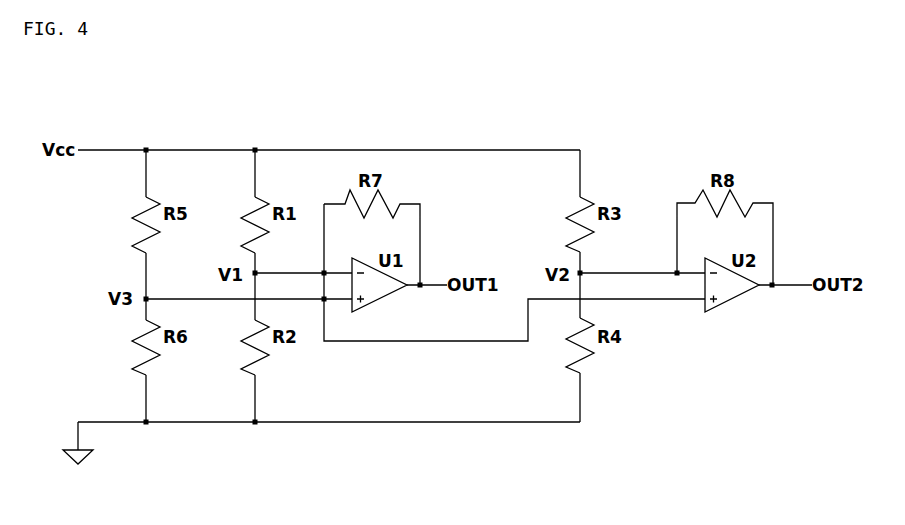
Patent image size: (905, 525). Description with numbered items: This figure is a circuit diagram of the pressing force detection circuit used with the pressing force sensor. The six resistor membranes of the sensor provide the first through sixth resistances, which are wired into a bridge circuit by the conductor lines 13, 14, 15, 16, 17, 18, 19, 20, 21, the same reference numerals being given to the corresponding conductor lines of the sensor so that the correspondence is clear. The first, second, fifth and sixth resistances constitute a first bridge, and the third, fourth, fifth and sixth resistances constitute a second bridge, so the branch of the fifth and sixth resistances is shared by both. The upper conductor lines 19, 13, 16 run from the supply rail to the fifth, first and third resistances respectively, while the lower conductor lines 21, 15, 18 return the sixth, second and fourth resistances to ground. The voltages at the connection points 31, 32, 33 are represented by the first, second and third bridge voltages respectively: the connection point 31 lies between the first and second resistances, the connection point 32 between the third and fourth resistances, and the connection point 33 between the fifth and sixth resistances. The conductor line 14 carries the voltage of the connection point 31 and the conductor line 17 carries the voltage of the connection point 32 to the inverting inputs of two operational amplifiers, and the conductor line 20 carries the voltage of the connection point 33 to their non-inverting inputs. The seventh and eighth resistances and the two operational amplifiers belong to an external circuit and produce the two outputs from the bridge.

The conductor line 13 is at (256, 174).
The conductor line 14 is at (258, 271).
The conductor line 15 is at (256, 398).
The conductor line 16 is at (580, 166).
The conductor line 17 is at (583, 270).
The conductor line 18 is at (583, 395).
The conductor line 19 is at (147, 174).
The conductor line 20 is at (213, 301).
The conductor line 21 is at (147, 398).
The connection point 31 is at (258, 276).
The connection point 32 is at (583, 276).
The connection point 33 is at (149, 297).